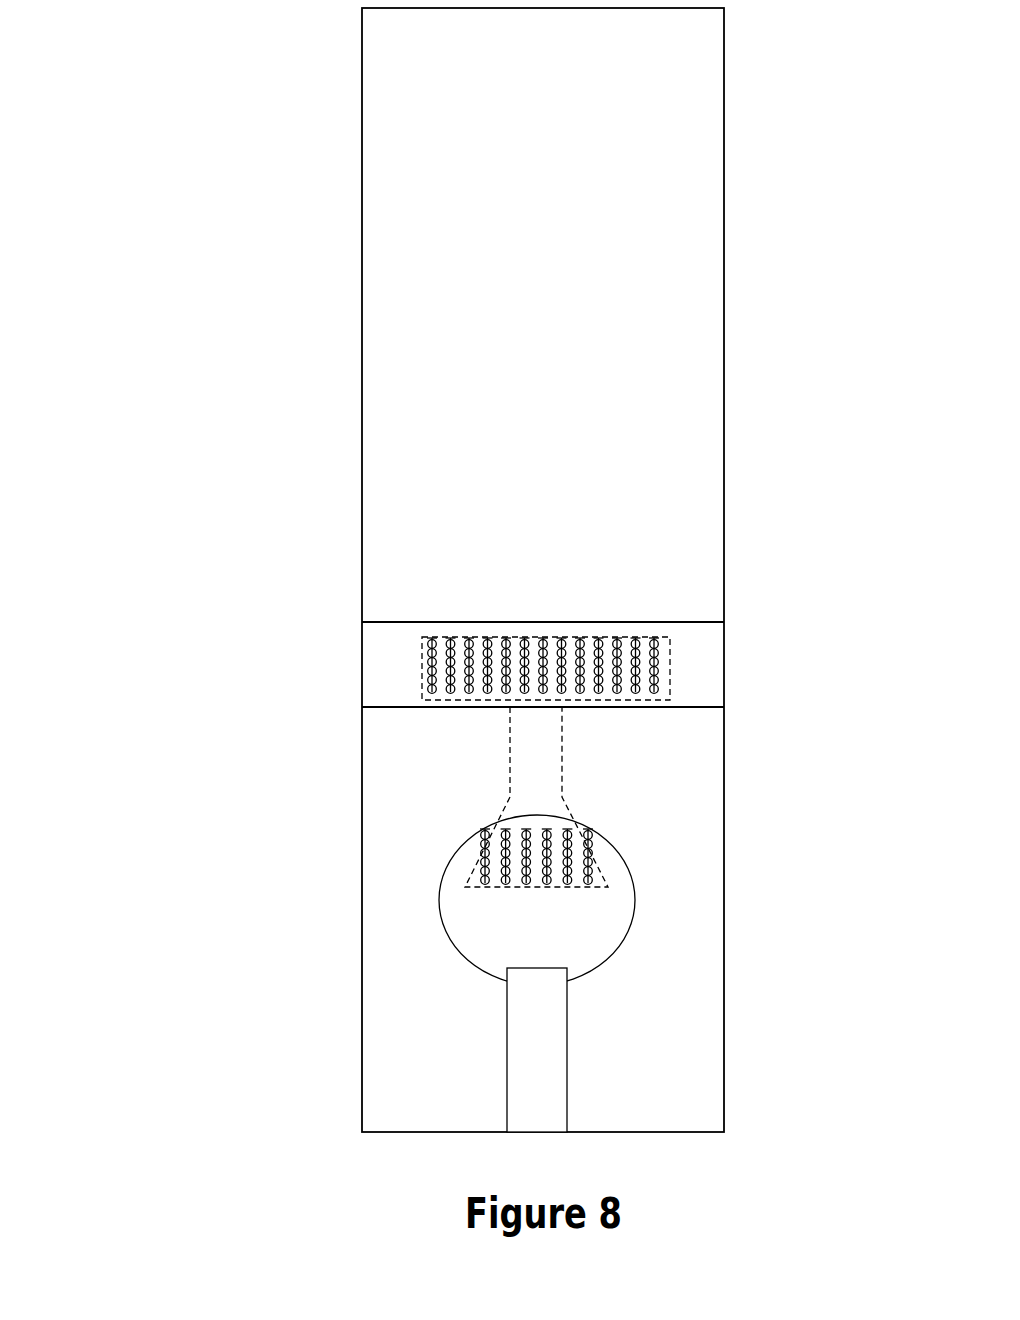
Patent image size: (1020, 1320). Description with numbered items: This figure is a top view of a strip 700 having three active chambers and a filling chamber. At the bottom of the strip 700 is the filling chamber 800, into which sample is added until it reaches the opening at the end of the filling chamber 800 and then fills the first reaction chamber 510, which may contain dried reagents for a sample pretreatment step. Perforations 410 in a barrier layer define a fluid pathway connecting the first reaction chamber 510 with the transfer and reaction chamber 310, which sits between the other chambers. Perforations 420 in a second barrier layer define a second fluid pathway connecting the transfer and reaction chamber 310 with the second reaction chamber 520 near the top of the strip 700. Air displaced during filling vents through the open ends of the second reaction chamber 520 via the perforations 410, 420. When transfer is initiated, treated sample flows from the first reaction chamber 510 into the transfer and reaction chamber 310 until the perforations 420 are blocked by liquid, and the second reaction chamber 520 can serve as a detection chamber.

The strip 700 is at (278, 428).
The second reaction chamber (or third chamber) 520 is at (382, 657).
The perforations 420 is at (593, 661).
The transfer and reaction chamber (or second chamber) 310 is at (522, 758).
The perforations 410 is at (593, 863).
The first reaction chamber (or first chamber) 510 is at (527, 929).
The filling chamber 800 is at (522, 1044).